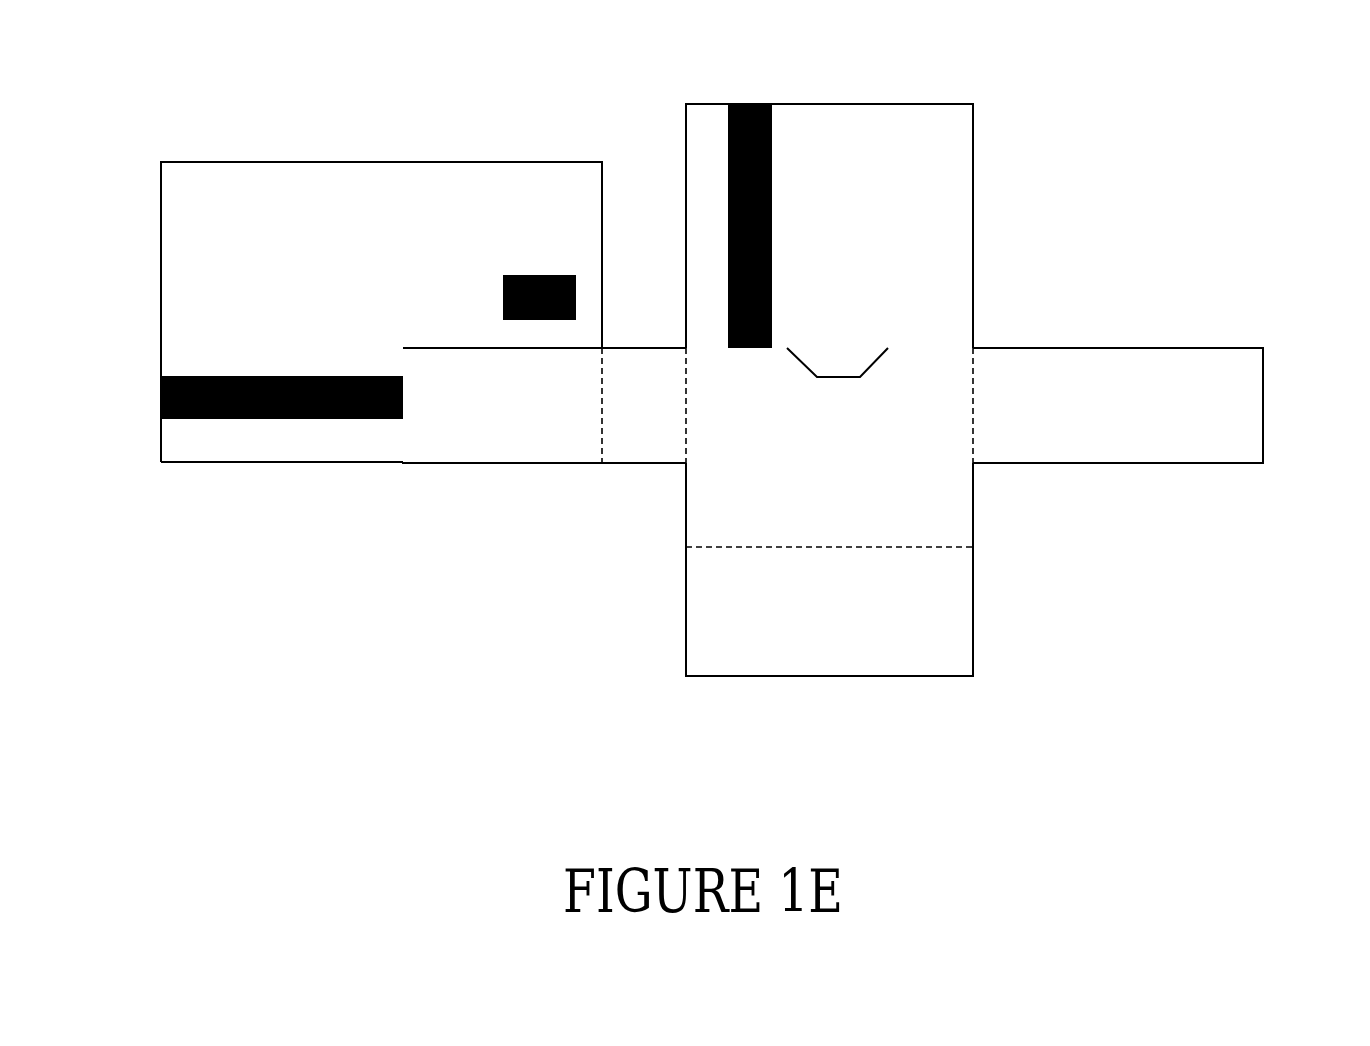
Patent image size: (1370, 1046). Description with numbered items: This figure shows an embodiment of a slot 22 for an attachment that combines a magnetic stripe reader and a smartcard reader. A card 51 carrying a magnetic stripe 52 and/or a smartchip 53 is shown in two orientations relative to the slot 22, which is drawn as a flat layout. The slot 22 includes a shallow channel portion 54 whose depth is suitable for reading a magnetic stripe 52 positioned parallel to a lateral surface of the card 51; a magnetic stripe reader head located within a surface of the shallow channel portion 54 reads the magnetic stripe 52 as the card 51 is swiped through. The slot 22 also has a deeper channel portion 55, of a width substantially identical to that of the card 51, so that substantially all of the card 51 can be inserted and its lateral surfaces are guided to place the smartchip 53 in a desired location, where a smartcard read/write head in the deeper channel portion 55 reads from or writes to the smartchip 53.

The slot 22 is at (1148, 348).
The card 51 is at (462, 162).
The magnetic stripe 52 is at (190, 377).
The smartchip 53 is at (546, 278).
The shallow channel portion 54 is at (1059, 392).
The deeper channel portion 55 is at (902, 618).